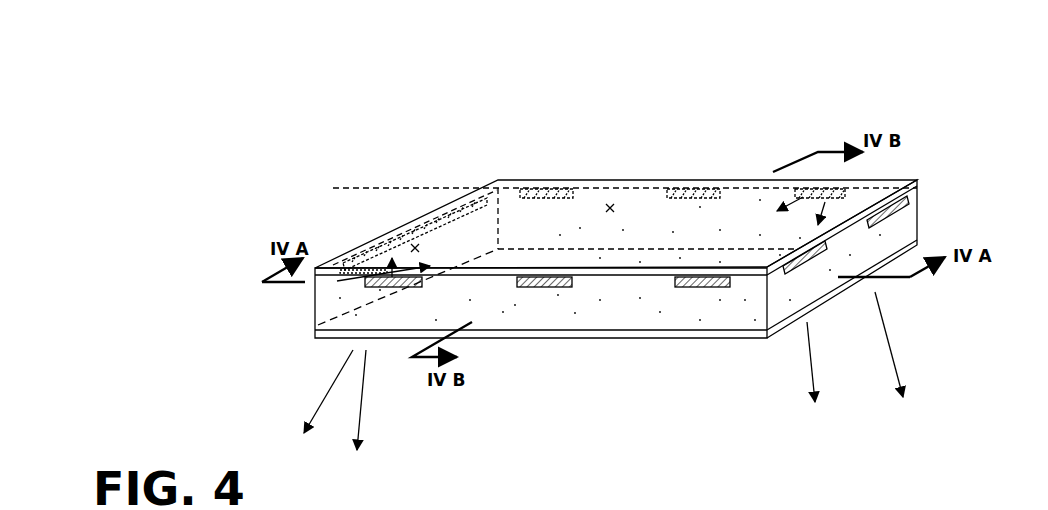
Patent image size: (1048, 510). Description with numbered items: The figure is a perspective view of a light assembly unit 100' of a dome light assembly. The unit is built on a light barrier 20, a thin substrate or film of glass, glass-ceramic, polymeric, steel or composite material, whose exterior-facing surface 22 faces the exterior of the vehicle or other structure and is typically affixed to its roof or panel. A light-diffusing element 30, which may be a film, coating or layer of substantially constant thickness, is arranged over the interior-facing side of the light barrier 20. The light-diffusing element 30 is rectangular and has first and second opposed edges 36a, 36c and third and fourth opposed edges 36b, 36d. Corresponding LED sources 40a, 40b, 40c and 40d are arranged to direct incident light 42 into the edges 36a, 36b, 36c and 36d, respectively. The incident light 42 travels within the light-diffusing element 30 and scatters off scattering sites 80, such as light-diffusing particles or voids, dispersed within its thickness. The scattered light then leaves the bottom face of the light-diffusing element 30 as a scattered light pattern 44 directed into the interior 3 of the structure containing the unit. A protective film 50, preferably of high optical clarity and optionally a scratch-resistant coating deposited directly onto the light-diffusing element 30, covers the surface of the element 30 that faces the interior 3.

The light assembly unit 100' is at (788, 72).
The light barrier 20 is at (912, 205).
The exterior-facing surface 22 is at (648, 202).
The light-diffusing element 30 is at (906, 208).
The interior 3 is at (535, 396).
The first edge 36a is at (797, 298).
The third edge 36b is at (622, 320).
The second edge 36c is at (408, 248).
The fourth edge 36d is at (610, 206).
The LED source 40a is at (884, 220).
The LED source 40b is at (703, 288).
The LED source 40c is at (467, 202).
The LED source 40d is at (553, 197).
The incident light 42 is at (337, 281).
The scattered light pattern 44 is at (340, 372).
The protective film 50 is at (903, 260).
The scattering sites 80 is at (538, 310).